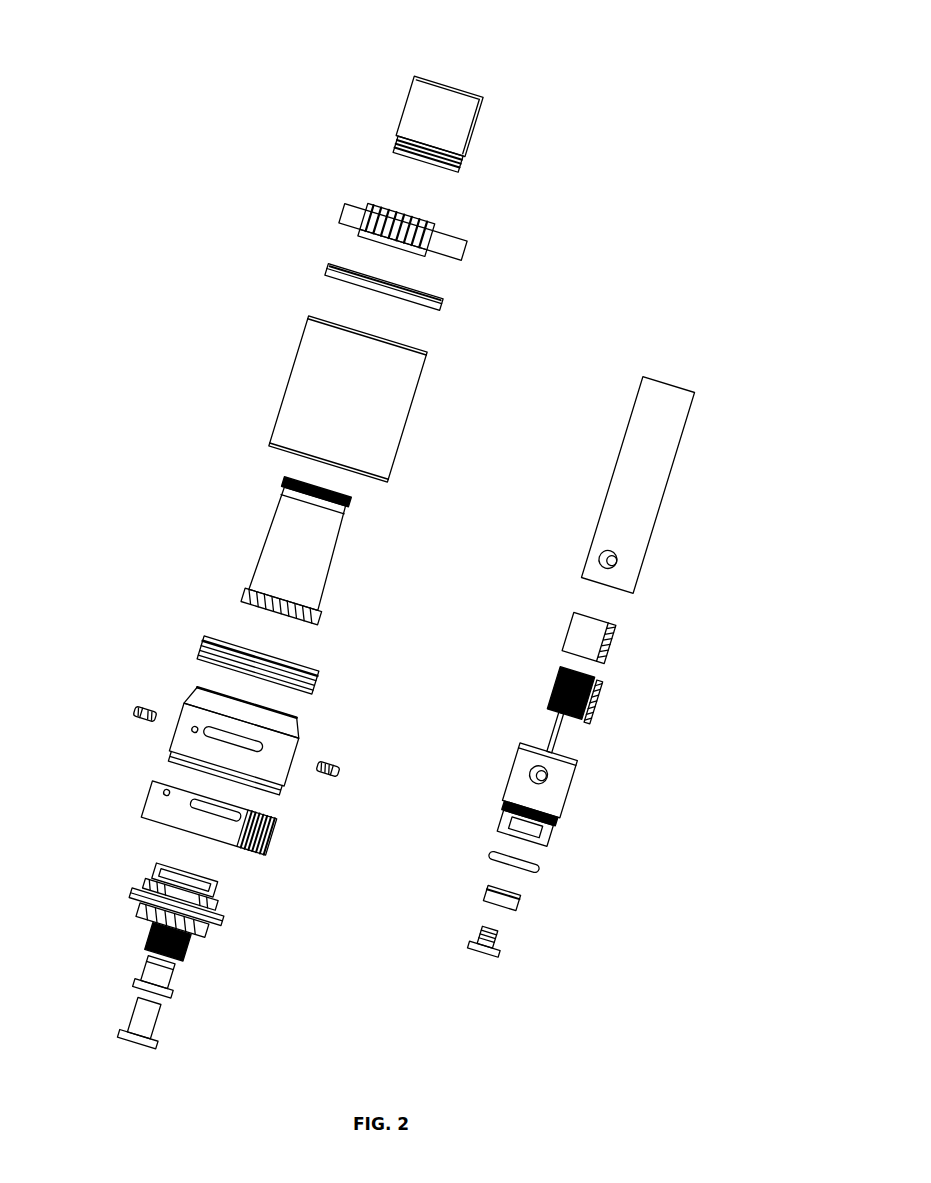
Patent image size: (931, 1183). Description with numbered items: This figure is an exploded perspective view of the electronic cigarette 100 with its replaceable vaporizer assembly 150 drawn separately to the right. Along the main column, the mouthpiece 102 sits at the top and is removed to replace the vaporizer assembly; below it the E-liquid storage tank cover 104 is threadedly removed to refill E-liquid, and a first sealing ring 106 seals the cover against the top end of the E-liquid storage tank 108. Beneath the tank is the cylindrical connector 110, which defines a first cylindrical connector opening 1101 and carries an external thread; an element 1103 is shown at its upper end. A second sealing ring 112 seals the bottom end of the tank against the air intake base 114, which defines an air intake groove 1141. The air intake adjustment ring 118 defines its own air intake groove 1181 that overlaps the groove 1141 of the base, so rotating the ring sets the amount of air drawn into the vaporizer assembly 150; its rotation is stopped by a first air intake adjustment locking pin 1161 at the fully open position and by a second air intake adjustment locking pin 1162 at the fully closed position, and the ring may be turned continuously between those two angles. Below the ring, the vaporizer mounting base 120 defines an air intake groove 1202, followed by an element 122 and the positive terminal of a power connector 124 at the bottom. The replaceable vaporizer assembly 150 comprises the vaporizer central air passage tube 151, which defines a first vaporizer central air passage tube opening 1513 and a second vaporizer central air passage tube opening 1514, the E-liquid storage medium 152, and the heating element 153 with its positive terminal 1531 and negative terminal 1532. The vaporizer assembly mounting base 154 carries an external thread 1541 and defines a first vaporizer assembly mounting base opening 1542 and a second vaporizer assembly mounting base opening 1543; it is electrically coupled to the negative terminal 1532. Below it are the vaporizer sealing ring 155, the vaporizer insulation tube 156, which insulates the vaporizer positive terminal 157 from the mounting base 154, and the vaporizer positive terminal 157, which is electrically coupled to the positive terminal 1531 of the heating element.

The electronic cigarette 100 is at (66, 66).
The mouthpiece 102 is at (398, 112).
The E-liquid storage tank cover 104 is at (343, 208).
The first sealing ring 106 is at (325, 268).
The E-liquid storage tank 108 is at (283, 385).
The cylindrical connector 110 is at (323, 551).
The upper sealing ring of tube 1103 is at (352, 496).
The first cylindrical connector opening 1101 is at (308, 603).
The second sealing ring 112 is at (205, 650).
The air intake base 114 is at (245, 728).
The air intake groove of the air intake base 1141 is at (262, 748).
The first air intake adjustment locking pin 1161 is at (133, 712).
The second air intake adjustment locking pin 1162 is at (340, 770).
The air intake adjustment ring 118 is at (169, 793).
The air intake groove of the air intake adjustment ring 1181 is at (178, 803).
The vaporizer mounting base 120 is at (141, 901).
The air intake groove of the vaporizer mounting base 1202 is at (162, 875).
The insulating sleeve 122 is at (143, 977).
The positive terminal of a power connector 124 is at (130, 1017).
The replaceable vaporizer assembly 150 is at (822, 629).
The vaporizer central air passage tube 151 is at (614, 485).
The first vaporizer central air passage tube opening 1513 is at (600, 560).
The second vaporizer central air passage tube opening 1514 is at (622, 562).
The E-liquid storage medium 152 is at (565, 630).
The heating element 153 is at (582, 701).
The negative terminal 1532 is at (596, 690).
The positive terminal 1531 is at (556, 725).
The vaporizer assembly mounting base 154 is at (533, 781).
The first vaporizer assembly mounting base opening 1542 is at (535, 775).
The second vaporizer assembly mounting base opening 1543 is at (548, 778).
The external thread 1541 is at (512, 805).
The vaporizer sealing ring 155 is at (490, 855).
The vaporizer insulation tube 156 is at (486, 898).
The vaporizer positive terminal 157 is at (475, 940).